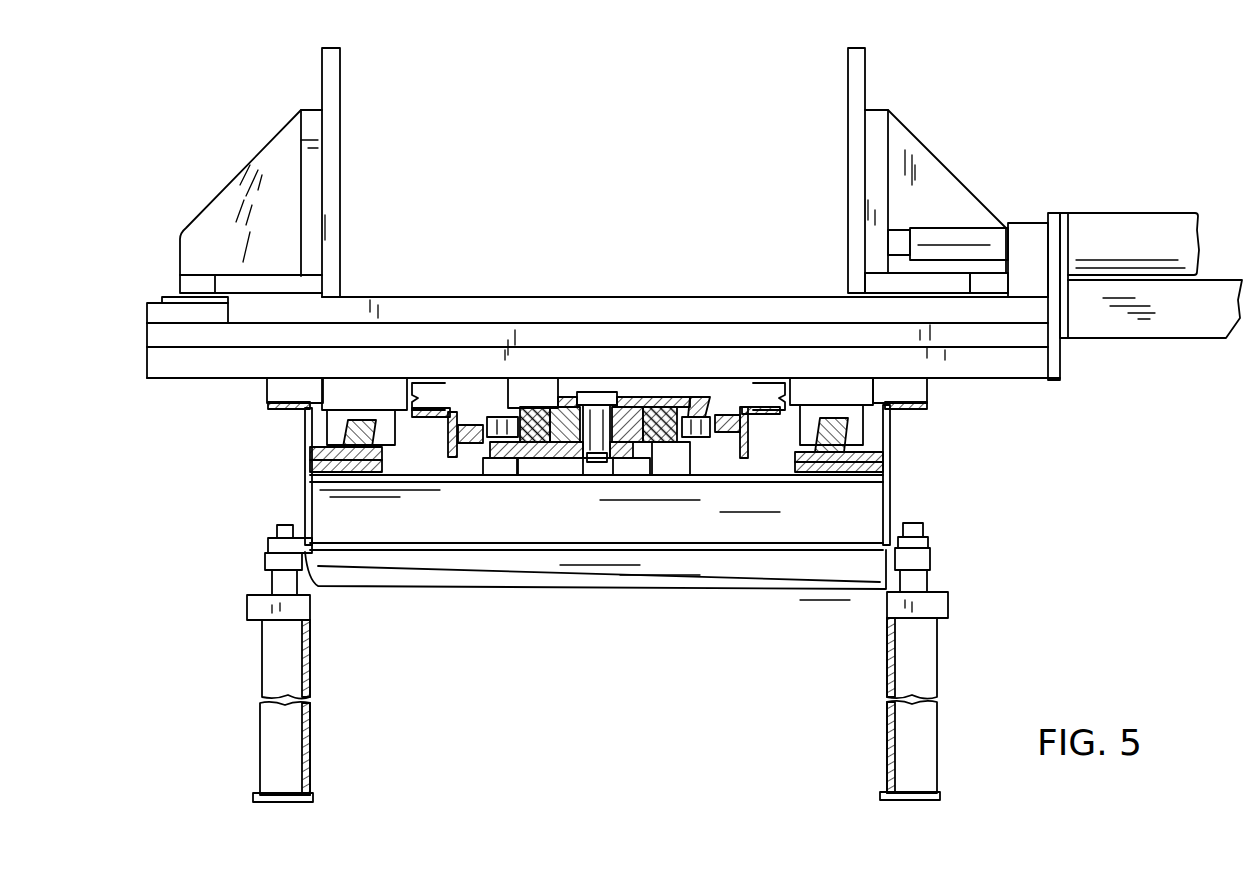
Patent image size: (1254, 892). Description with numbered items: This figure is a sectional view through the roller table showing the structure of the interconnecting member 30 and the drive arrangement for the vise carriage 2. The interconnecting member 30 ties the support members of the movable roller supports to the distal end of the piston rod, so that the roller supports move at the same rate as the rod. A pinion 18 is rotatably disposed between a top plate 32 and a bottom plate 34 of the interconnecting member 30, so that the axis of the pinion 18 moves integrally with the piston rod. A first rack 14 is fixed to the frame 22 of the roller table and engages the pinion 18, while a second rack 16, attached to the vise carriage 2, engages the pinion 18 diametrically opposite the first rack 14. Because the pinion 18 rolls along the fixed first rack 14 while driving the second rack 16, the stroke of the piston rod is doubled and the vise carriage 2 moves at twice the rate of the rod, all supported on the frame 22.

The vise carriage 2 is at (694, 425).
The first rack 14 is at (500, 452).
The second rack 16 is at (687, 397).
The pinion 18 is at (587, 447).
The frame 22 is at (948, 664).
The interconnecting member 30 is at (620, 465).
The top plate 32 is at (650, 397).
The bottom plate 34 is at (535, 452).